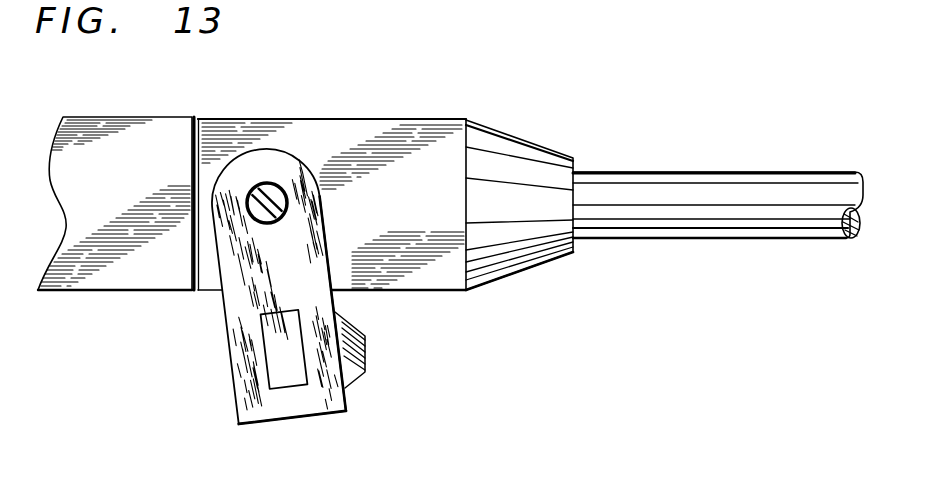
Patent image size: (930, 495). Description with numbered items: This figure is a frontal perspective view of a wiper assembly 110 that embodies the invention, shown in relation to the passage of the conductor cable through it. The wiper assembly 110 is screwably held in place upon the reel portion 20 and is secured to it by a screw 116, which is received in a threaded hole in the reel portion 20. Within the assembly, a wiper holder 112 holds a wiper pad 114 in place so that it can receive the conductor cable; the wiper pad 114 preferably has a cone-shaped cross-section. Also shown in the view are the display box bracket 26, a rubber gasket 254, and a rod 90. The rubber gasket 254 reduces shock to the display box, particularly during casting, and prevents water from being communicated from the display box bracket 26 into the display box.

The display box bracket 26 is at (101, 118).
The reel portion 20 is at (415, 120).
The rubber gasket 254 is at (192, 290).
The rod 90 is at (685, 172).
The wiper assembly 110 is at (233, 360).
The wiper holder 112 is at (312, 413).
The wiper pad 114 is at (368, 375).
The screw 116 is at (287, 192).